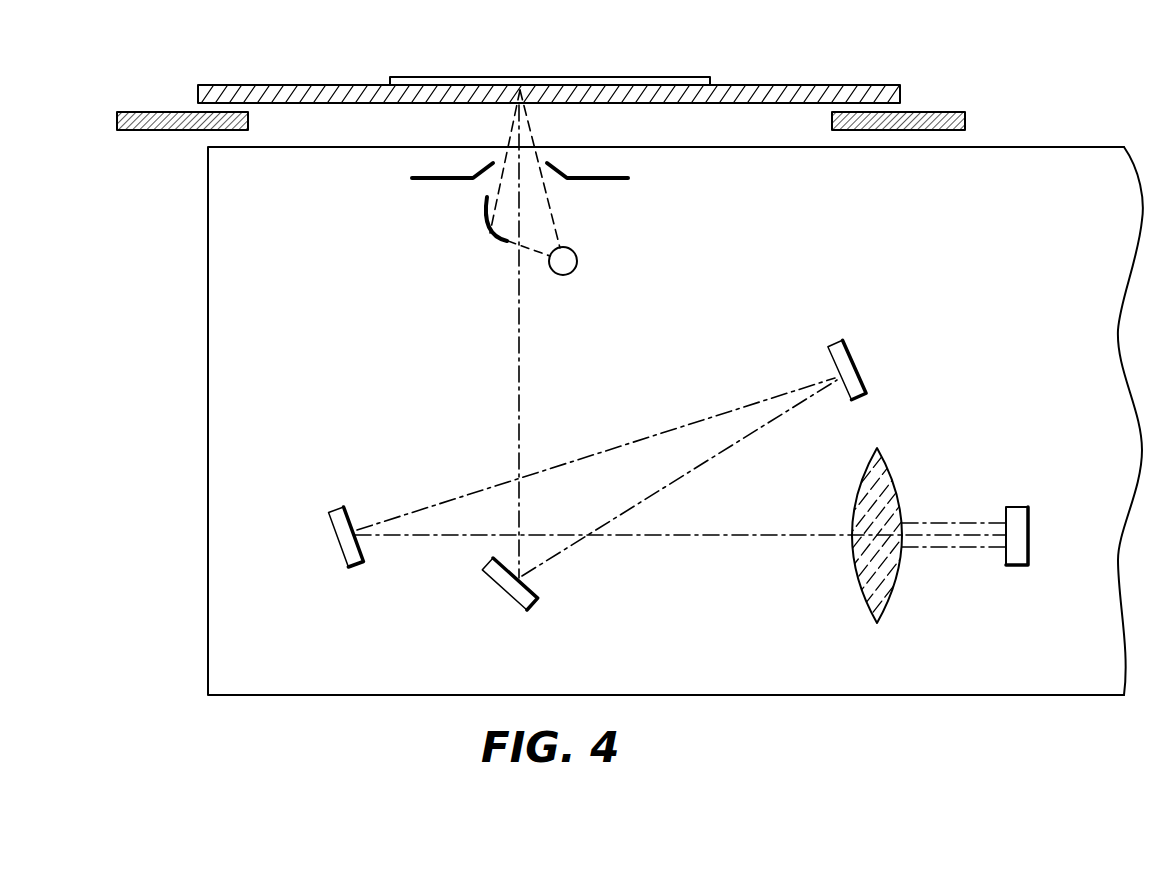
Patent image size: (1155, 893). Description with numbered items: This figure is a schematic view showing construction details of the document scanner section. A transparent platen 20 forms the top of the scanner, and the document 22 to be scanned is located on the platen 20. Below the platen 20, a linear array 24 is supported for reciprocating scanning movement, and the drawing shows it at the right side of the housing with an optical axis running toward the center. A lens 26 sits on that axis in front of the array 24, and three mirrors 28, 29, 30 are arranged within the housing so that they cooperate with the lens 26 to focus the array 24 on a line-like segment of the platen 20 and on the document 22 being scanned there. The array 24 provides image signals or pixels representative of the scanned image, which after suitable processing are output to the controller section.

The transparent platen 20 is at (312, 104).
The document 22 is at (600, 77).
The linear array 24 is at (1020, 507).
The lens 26 is at (890, 592).
The mirror 28 is at (514, 600).
The mirror 29 is at (856, 365).
The mirror 30 is at (336, 550).